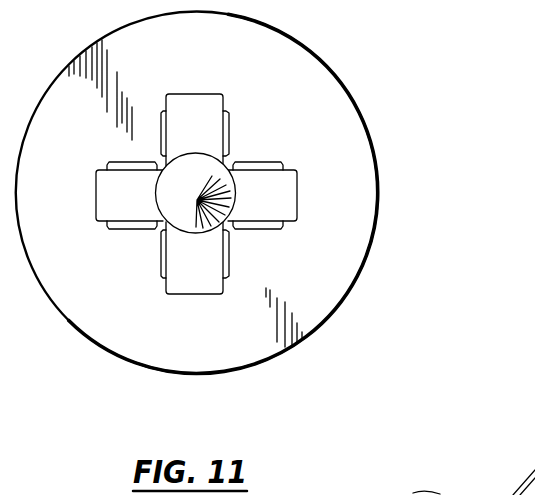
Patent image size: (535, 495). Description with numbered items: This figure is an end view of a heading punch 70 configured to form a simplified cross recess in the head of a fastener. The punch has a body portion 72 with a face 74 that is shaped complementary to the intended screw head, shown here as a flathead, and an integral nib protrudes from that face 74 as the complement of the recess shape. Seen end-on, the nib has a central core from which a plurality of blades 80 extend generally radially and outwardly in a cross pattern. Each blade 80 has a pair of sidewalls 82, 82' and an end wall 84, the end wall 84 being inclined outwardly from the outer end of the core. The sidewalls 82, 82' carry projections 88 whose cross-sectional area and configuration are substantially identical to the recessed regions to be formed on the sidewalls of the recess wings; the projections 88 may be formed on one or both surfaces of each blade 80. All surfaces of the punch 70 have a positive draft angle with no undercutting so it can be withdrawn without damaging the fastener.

The punch 70 is at (384, 127).
The body portion 72 is at (378, 220).
The face 74 is at (322, 93).
The blades 80 is at (190, 260).
The sidewall 82 is at (102, 194).
The sidewall 82' is at (259, 165).
The end wall 84 is at (122, 203).
The projections 88 is at (258, 160).